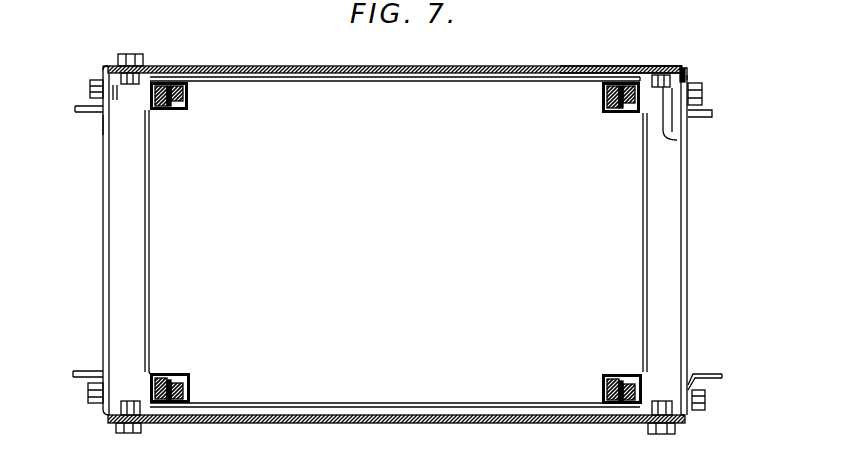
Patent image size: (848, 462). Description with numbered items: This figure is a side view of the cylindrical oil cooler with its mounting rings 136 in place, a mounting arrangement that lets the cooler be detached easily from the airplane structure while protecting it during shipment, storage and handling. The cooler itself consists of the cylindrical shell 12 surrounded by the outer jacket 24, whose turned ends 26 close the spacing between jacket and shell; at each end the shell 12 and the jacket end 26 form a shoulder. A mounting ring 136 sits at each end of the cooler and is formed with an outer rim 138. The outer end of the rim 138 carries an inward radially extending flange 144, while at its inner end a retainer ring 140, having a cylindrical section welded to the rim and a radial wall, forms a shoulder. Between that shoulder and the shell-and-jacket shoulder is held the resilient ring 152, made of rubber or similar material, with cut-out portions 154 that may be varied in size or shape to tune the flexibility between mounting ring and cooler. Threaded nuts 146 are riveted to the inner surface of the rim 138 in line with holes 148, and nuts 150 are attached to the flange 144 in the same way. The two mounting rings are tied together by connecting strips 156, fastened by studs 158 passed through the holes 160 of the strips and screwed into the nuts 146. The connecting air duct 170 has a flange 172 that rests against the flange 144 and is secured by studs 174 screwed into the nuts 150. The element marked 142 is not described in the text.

The cylindrical shell 12 is at (157, 113).
The outer jacket 24 is at (280, 90).
The turned ends of the jacket 26 is at (187, 88).
The mounting ring 136 is at (703, 76).
The outer rim 138 is at (602, 67).
The retainer ring 140 is at (644, 108).
The bottom flange 142 is at (703, 388).
The inward radially extending flange 144 is at (103, 72).
The threaded nuts 146 is at (100, 70).
The hole 148 is at (650, 67).
The nuts 150 is at (113, 100).
The resilient ring 152 is at (187, 107).
The cut-out portions 154 is at (167, 113).
The connecting strips 156 is at (363, 70).
The studs 158 is at (143, 60).
The holes of the connecting strips 160 is at (115, 65).
The connecting air duct 170 is at (80, 112).
The air duct flange 172 is at (103, 123).
The studs 174 is at (90, 83).